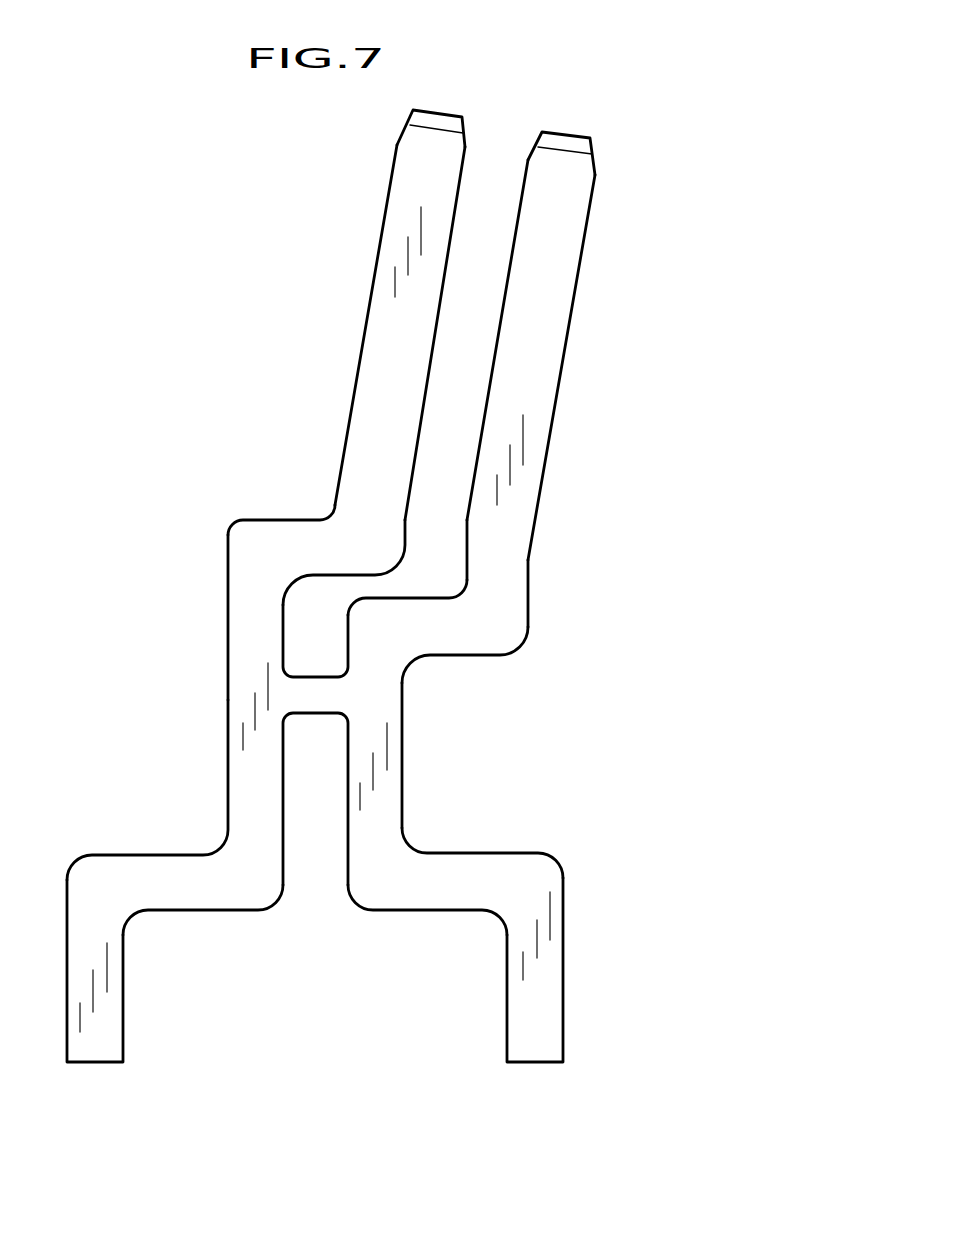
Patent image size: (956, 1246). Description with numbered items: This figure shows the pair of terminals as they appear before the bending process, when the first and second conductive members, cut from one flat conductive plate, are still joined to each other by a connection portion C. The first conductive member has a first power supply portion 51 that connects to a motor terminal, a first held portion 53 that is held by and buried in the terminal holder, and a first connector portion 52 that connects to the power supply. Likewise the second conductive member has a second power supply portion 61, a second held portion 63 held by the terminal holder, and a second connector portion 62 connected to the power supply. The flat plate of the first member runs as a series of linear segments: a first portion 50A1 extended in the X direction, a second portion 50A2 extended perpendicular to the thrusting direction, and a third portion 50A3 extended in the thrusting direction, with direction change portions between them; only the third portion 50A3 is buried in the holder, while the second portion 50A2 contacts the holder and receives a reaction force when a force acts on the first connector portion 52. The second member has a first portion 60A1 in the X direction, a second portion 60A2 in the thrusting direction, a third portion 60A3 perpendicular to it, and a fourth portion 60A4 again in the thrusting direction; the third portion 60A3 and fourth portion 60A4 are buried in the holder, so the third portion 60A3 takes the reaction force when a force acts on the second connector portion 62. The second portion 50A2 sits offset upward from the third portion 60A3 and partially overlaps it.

The first connector portion 52 is at (413, 168).
The second connector portion 62 is at (578, 210).
The first portion 50A1 is at (380, 320).
The first portion 60A1 is at (552, 343).
The second portion 50A2 is at (292, 540).
The second portion 60A2 is at (510, 560).
The third portion 50A3 is at (250, 643).
The third portion 60A3 is at (460, 642).
The fourth portion 60A4 is at (388, 705).
The first held portion 53 is at (247, 783).
The second held portion 63 is at (382, 810).
The first power supply portion 51 is at (95, 1047).
The second power supply portion 61 is at (535, 1047).
The connection portion C is at (317, 693).